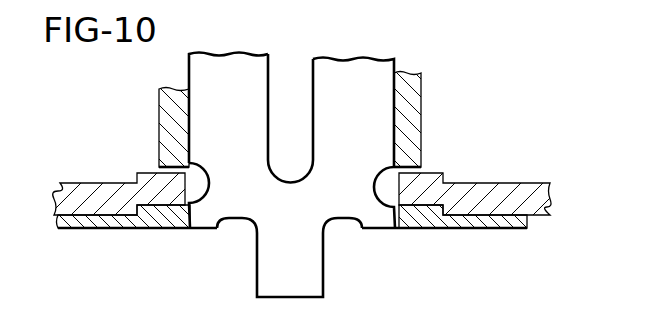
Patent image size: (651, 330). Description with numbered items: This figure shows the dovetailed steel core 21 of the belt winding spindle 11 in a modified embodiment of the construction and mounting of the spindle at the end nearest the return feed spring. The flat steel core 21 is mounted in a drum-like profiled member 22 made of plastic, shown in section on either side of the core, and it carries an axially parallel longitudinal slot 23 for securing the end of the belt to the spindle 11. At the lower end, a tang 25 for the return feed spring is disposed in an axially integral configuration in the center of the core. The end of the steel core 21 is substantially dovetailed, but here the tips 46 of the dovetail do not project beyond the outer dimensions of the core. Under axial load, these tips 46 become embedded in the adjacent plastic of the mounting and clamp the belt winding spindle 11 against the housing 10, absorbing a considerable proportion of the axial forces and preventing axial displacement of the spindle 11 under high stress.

The housing 10 is at (83, 187).
The belt winding spindle 11 is at (156, 117).
The steel core 21 is at (328, 65).
The profiled member 22 is at (403, 77).
The longitudinal slot 23 is at (270, 63).
The tang 25 is at (313, 279).
The tips of the dovetail 46 is at (203, 221).